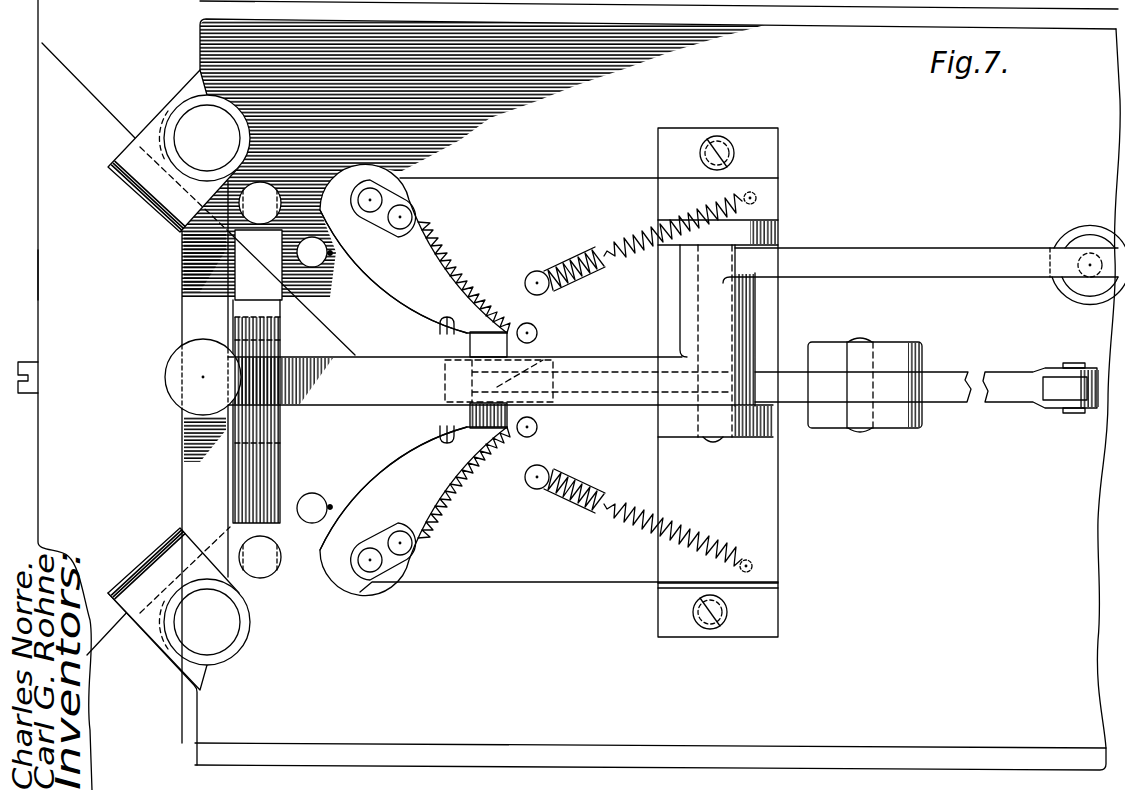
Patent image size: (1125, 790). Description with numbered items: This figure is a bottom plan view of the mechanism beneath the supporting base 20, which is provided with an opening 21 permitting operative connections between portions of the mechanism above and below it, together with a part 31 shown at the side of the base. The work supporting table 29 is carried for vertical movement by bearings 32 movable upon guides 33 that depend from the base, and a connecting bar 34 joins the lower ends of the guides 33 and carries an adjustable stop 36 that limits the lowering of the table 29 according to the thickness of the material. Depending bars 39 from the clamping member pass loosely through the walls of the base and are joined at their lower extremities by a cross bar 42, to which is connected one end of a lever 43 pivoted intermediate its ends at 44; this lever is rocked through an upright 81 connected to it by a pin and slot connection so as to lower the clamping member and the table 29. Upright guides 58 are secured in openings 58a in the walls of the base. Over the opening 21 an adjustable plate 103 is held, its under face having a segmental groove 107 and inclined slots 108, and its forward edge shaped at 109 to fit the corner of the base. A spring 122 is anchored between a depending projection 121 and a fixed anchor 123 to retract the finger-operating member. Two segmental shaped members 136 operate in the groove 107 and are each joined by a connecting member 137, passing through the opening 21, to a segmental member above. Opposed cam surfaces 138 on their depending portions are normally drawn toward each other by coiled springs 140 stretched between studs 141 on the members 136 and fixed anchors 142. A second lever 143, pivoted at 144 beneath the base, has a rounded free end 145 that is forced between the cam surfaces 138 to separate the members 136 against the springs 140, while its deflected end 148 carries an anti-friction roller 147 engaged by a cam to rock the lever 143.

The supporting base 20 is at (48, 21).
The opening 21 is at (350, 170).
The table 29 is at (57, 258).
The stop lug 31 is at (27, 360).
The bearings 32 is at (193, 103).
The guides 33 is at (228, 130).
The connecting bar 34 is at (190, 268).
The stop 36 is at (178, 394).
The depending bars 39 is at (262, 194).
The cross bar 42 is at (283, 275).
The lever 43 is at (360, 355).
The pivot 44 is at (718, 440).
The upright guides 58 is at (312, 246).
The openings 58a is at (331, 254).
The upright 81 is at (1080, 292).
The plate 103 is at (564, 190).
The segmental groove 107 is at (553, 362).
The slots 108 is at (572, 292).
The shaped forward edge 109 is at (440, 325).
The depending projection 121 is at (545, 274).
The spring 122 is at (634, 242).
The fixed anchor 123 is at (758, 198).
The segmental shaped members 136 is at (456, 302).
The connecting member 137 is at (373, 198).
The cam surface 138 is at (470, 350).
The elastic members 140 is at (510, 318).
The stud 141 is at (407, 213).
The fixed anchor 142 is at (538, 333).
The lever 143 is at (790, 386).
The pivot 144 is at (868, 430).
The free end 145 is at (450, 372).
The anti-friction roller 147 is at (1092, 412).
The deflected end 148 is at (1025, 398).